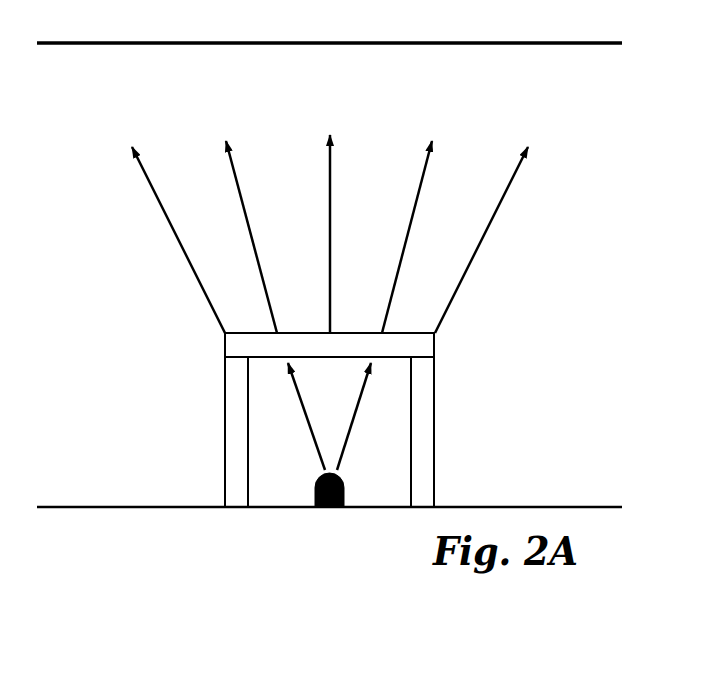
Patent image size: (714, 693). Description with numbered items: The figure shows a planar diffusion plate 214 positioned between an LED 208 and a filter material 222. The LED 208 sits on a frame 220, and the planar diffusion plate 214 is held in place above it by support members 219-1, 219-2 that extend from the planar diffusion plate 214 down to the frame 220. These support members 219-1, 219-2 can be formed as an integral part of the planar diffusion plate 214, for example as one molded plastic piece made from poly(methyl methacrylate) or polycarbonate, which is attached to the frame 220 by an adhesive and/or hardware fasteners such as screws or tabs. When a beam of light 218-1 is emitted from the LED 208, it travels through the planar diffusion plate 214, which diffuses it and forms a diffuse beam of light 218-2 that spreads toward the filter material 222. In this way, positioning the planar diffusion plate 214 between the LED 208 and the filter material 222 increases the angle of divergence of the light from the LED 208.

The filter material 222 is at (557, 43).
The frame 220 is at (117, 507).
The planar diffusion plate 214 is at (237, 345).
The support member 219-1 is at (427, 433).
The support member 219-2 is at (233, 433).
The LED 208 is at (344, 492).
The beam of light 218-1 is at (302, 414).
The diffuse beam of light 218-2 is at (160, 223).